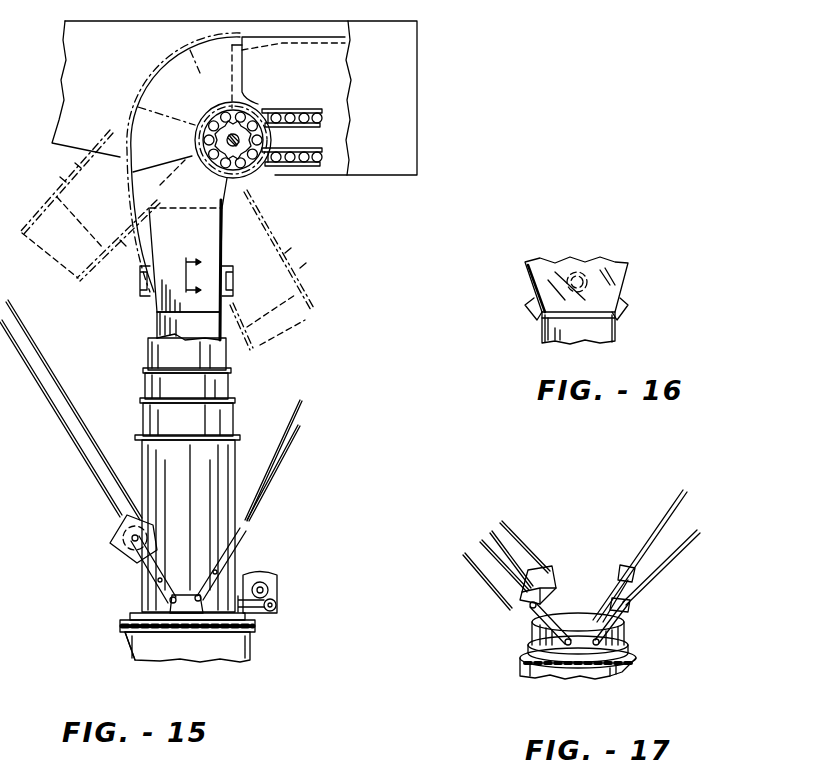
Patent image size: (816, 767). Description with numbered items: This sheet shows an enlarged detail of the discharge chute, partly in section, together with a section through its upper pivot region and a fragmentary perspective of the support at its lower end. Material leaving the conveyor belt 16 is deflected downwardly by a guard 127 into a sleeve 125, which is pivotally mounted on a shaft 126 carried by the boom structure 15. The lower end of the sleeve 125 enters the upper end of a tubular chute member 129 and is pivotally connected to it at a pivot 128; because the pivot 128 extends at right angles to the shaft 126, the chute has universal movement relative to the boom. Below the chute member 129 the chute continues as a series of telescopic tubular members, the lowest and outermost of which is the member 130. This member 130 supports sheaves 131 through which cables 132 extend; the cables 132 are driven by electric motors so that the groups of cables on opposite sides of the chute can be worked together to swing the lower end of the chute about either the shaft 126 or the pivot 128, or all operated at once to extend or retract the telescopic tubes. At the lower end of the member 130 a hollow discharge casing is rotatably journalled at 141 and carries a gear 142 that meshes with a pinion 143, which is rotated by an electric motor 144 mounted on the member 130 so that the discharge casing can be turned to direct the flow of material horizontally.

In FIG. 15, the frame plate 15 is at (405, 133).
In FIG. 15, the belt 16 is at (318, 118).
In FIG. 15, the sleeve 125 is at (152, 203).
In FIG. 16, the sleeve 125 is at (532, 283).
In FIG. 15, the shaft 126 is at (237, 135).
In FIG. 15, the guard 127 is at (144, 90).
In FIG. 15, the pivot 128 is at (230, 279).
In FIG. 16, the pivot 128 is at (585, 283).
In FIG. 15, the tubular chute member 129 is at (240, 332).
In FIG. 16, the tubular chute member 129 is at (617, 336).
In FIG. 15, the telescopic tubular member 130 is at (240, 462).
In FIG. 17, the telescopic tubular member 130 is at (630, 633).
In FIG. 15, the sheaves 131 is at (114, 552).
In FIG. 17, the sheaves 131 is at (620, 580).
In FIG. 15, the cables 132 is at (78, 413).
In FIG. 17, the cables 132 is at (528, 528).
In FIG. 15, the journal 141 is at (152, 609).
In FIG. 17, the journal 141 is at (633, 648).
In FIG. 15, the gear 142 is at (127, 635).
In FIG. 17, the gear 142 is at (603, 672).
In FIG. 15, the pinion 143 is at (256, 628).
In FIG. 15, the electric motor 144 is at (277, 589).